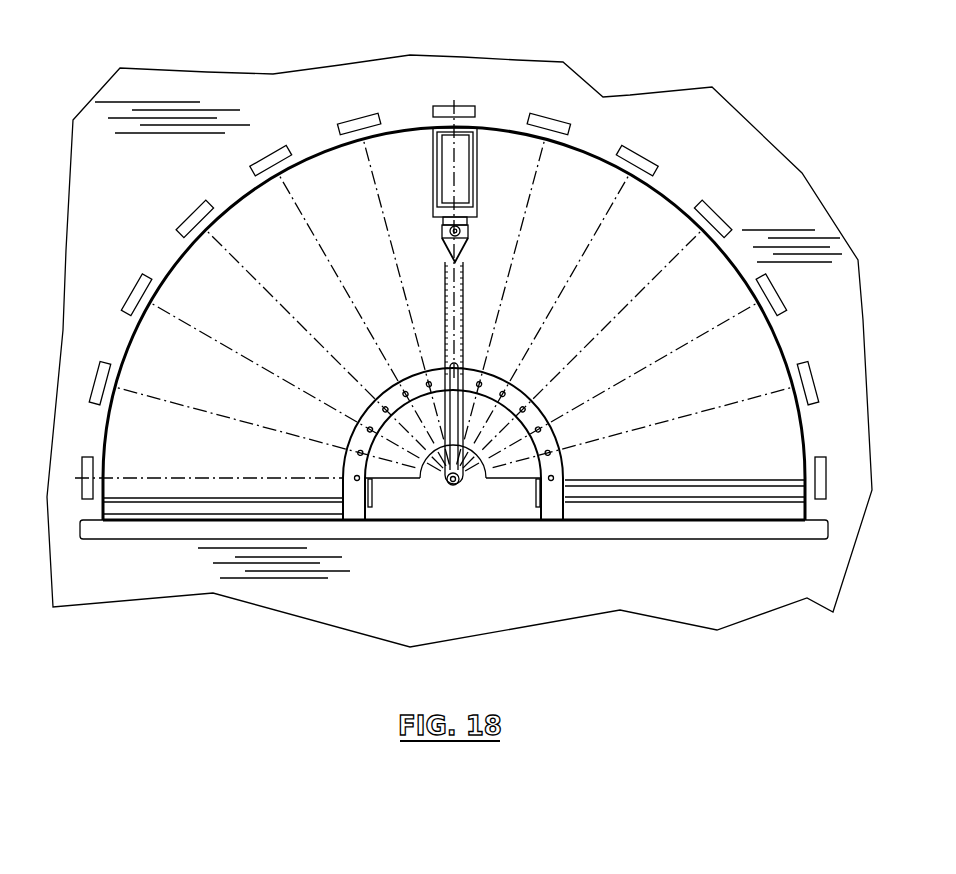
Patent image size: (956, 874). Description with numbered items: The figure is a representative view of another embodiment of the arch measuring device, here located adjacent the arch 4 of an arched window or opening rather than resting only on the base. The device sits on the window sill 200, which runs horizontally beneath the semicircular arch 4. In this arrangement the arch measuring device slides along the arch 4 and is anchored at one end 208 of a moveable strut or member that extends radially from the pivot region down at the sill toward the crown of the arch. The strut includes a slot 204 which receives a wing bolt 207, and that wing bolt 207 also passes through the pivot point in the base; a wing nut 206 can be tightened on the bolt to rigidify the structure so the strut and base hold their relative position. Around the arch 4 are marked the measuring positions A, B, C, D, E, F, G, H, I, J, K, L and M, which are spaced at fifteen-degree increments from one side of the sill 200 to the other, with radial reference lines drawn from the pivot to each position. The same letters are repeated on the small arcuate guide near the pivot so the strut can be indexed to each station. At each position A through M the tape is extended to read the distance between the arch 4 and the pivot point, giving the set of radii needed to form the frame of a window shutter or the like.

The arch 4 is at (397, 124).
The window sill 200 is at (675, 535).
The slot 204 is at (492, 480).
The wing nut 206 is at (442, 476).
The wing bolt 207 is at (450, 484).
The end of moveable strut 208 is at (488, 132).
The measuring position A is at (206, 476).
The measuring position B is at (217, 415).
The measuring position C is at (245, 357).
The measuring position D is at (285, 308).
The measuring position E is at (334, 268).
The measuring position F is at (392, 242).
The measuring position G is at (458, 227).
The measuring position H is at (515, 243).
The measuring position I is at (573, 271).
The measuring position J is at (623, 309).
The measuring position K is at (664, 358).
The measuring position L is at (688, 416).
The measuring position M is at (704, 511).